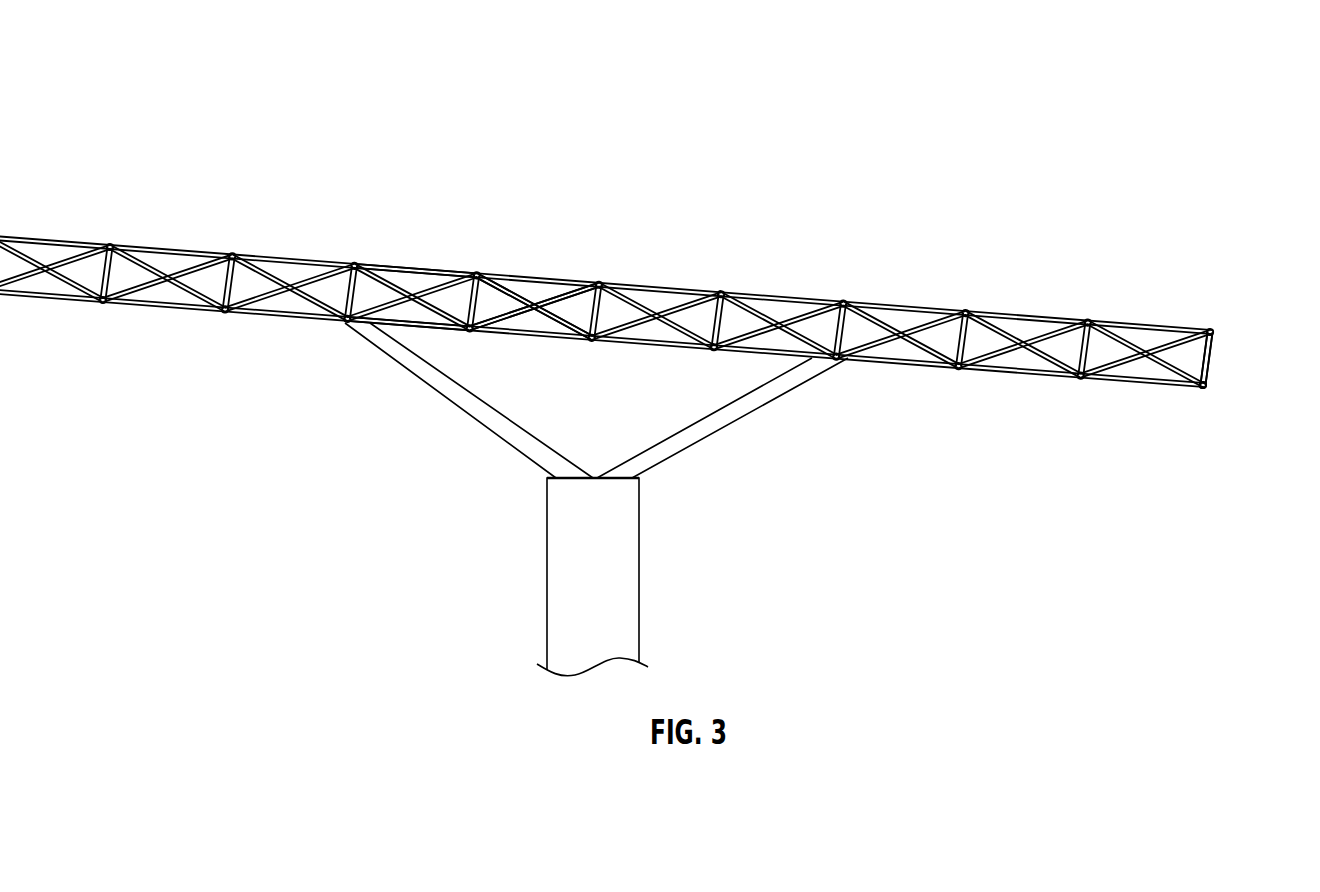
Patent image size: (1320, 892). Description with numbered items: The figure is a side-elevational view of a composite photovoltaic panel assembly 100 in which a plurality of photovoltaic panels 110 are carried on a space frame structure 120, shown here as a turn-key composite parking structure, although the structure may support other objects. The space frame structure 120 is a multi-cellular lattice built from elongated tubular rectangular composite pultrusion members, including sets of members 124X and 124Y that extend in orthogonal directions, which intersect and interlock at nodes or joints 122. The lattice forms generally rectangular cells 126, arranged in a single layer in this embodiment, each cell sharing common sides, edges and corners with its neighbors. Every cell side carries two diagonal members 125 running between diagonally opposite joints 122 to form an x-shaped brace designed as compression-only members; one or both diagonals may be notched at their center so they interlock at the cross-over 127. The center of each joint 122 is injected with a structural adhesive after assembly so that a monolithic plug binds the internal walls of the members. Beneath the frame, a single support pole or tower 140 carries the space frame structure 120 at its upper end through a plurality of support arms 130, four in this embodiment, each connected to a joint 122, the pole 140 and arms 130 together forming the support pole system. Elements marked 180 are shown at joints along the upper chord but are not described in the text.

The photovoltaic panel assembly 100 is at (157, 109).
The photovoltaic panels 110 is at (894, 275).
The space frame structure 120 is at (894, 394).
The node or joint 122 is at (100, 310).
The elongate members extending in the X direction 124X is at (415, 265).
The elongate members extending in the Y direction 124Y is at (1212, 379).
The diagonal members 125 is at (263, 302).
The rectangular cell 126 is at (168, 262).
The cross-over 127 is at (535, 300).
The support arms 130 is at (480, 422).
The support pole or tower 140 is at (547, 578).
The upper chord joints 180 is at (965, 312).